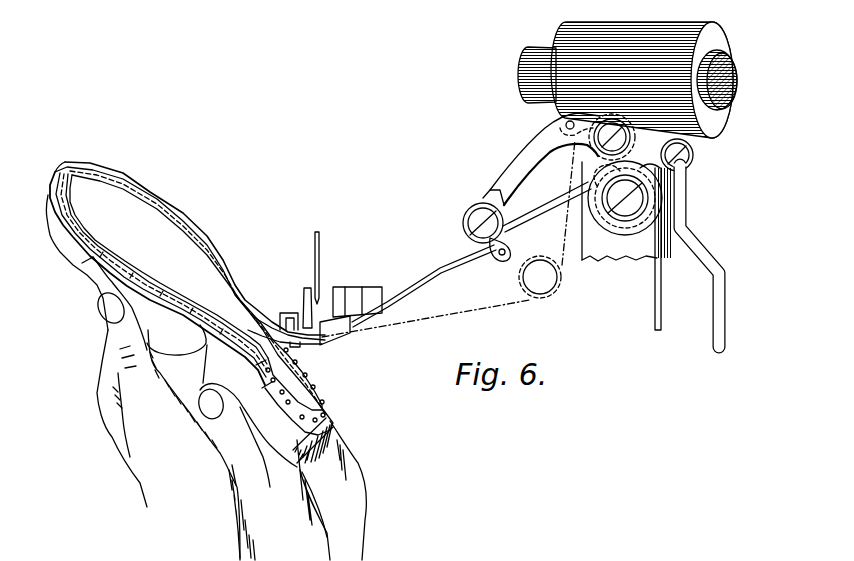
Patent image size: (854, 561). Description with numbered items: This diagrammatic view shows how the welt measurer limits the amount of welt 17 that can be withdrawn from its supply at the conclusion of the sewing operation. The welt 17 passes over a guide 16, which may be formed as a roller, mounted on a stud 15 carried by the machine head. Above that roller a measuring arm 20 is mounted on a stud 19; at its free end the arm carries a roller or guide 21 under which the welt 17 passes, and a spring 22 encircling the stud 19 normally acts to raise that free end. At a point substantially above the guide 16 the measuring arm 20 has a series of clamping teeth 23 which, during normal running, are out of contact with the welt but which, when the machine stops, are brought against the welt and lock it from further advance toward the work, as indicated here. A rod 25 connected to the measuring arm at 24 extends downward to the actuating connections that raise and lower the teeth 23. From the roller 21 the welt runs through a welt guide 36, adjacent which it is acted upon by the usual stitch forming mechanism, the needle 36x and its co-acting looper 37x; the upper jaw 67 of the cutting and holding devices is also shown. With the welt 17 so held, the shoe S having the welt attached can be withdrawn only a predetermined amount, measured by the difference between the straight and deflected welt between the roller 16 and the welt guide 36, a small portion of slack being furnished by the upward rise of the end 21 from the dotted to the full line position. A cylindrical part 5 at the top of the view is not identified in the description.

The shoe S is at (173, 247).
The motor 5 is at (737, 64).
The stud 15 is at (625, 212).
The guide 16 is at (653, 207).
The welt 17 is at (453, 268).
The stud 19 is at (612, 120).
The measuring arm 20 is at (537, 137).
The roller or guide 21 is at (463, 221).
The spring 22 is at (547, 199).
The clamping teeth 23 is at (680, 173).
The connection point 24 is at (700, 162).
The rod 25 is at (727, 291).
The welt guide 36 is at (338, 334).
The needle 36x is at (320, 243).
The looper 37x is at (307, 290).
The upper jaw 67 is at (296, 313).